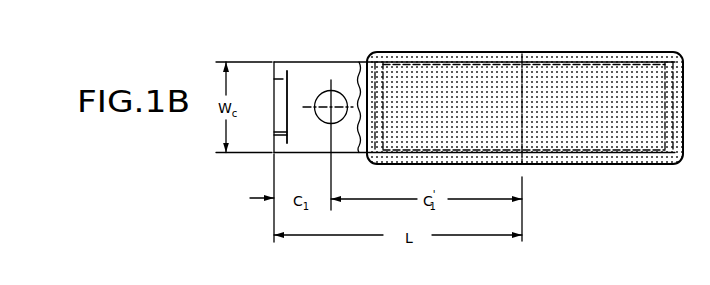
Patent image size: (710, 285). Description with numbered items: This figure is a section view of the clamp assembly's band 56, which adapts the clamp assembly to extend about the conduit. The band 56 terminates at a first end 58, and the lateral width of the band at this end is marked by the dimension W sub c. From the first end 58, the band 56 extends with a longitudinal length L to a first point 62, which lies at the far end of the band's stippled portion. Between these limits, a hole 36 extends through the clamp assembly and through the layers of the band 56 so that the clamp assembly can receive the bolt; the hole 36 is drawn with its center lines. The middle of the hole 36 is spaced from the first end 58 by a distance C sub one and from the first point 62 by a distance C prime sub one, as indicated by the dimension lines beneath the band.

The hole 36 is at (322, 96).
The band 56 is at (338, 73).
The first end 58 is at (282, 133).
The first point 62 is at (523, 219).